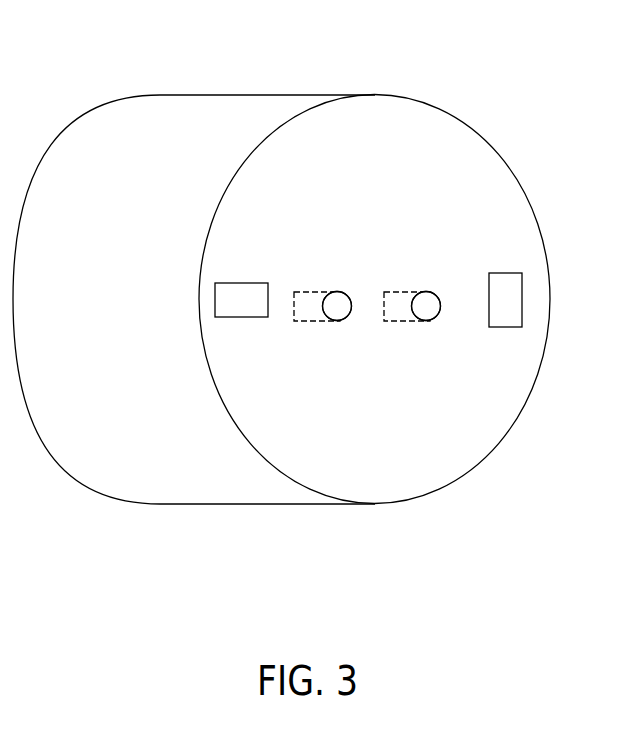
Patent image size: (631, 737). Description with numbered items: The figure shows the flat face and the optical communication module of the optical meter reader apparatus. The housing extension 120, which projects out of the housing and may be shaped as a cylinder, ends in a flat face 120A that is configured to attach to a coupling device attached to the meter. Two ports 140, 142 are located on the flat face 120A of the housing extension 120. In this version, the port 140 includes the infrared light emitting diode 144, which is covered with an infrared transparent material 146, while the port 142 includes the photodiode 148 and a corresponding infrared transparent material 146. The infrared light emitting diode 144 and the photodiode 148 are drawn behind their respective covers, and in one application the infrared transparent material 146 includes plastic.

The housing extension 120 is at (247, 96).
The flat face 120A is at (427, 460).
The port 140 is at (338, 276).
The port 142 is at (428, 276).
The infrared light emitting diode 144 is at (308, 302).
The infrared transparent material 146 is at (345, 320).
The photodiode 148 is at (398, 302).